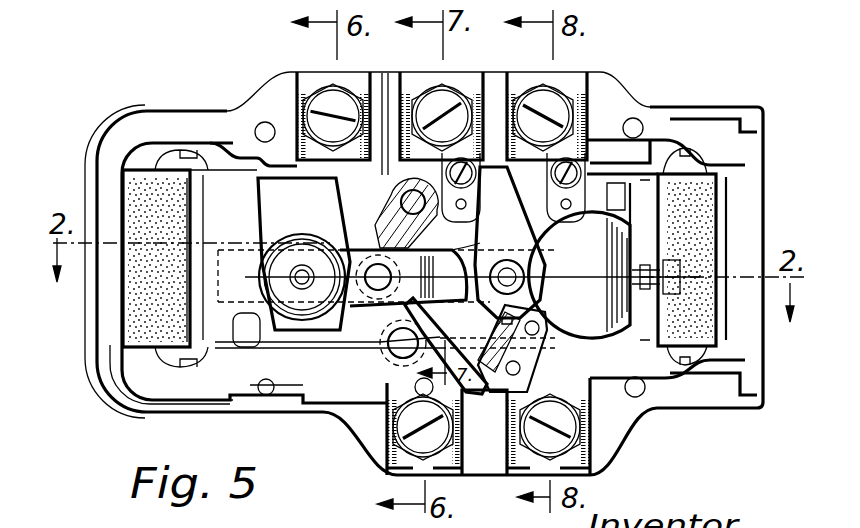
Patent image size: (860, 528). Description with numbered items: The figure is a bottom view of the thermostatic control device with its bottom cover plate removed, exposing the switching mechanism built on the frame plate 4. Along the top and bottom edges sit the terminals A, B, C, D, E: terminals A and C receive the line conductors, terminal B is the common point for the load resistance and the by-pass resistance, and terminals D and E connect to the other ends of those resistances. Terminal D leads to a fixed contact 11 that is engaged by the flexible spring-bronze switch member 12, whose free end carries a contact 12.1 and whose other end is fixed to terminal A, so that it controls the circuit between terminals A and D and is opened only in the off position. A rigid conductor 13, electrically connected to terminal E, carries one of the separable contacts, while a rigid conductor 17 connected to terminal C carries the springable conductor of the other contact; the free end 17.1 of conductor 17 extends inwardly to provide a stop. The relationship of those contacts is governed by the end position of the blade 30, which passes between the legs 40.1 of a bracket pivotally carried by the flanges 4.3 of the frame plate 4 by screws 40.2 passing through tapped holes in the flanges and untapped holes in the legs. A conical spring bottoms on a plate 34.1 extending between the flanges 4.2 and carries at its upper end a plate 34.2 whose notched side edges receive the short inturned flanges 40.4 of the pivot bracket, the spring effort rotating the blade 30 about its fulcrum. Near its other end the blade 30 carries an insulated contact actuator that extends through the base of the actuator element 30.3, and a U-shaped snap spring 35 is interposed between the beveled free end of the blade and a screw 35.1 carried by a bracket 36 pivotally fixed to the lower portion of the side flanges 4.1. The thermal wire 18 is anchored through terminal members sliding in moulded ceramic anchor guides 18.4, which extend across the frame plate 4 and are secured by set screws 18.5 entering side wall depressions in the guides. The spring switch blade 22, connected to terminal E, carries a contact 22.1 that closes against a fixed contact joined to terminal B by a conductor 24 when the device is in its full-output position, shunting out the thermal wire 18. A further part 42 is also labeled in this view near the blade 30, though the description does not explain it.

The frame plate 4 is at (722, 222).
The side flanges 4.1 is at (727, 180).
The flanges 4.2 is at (285, 389).
The flanges 4.3 is at (160, 350).
The fixed contact 11 is at (398, 388).
The switch member 12 is at (327, 343).
The contact 12.1 is at (393, 352).
The rigid conductor 13 is at (580, 263).
The rigid conductor 17 is at (502, 250).
The free end 17.1 is at (562, 280).
The thermal wire 18 is at (385, 243).
The anchor guides 18.4 is at (140, 323).
The set screws 18.5 is at (147, 163).
The switch blade 22 is at (494, 340).
The contact 22.1 is at (415, 190).
The conductor 24 is at (385, 172).
The blade 30 is at (403, 278).
The actuator element 30.3 is at (480, 243).
The plate 34.1 is at (266, 396).
The plate 34.2 is at (207, 250).
The snap spring 35 is at (612, 360).
The screw 35.1 is at (677, 265).
The bracket 36 is at (660, 213).
The legs 40.1 is at (220, 357).
The screws 40.2 is at (203, 152).
The inturned flanges 40.4 is at (212, 172).
The pin 42 is at (385, 280).
The terminal A is at (335, 105).
The terminal B is at (442, 100).
The terminal C is at (548, 100).
The terminal D is at (423, 445).
The terminal E is at (548, 445).